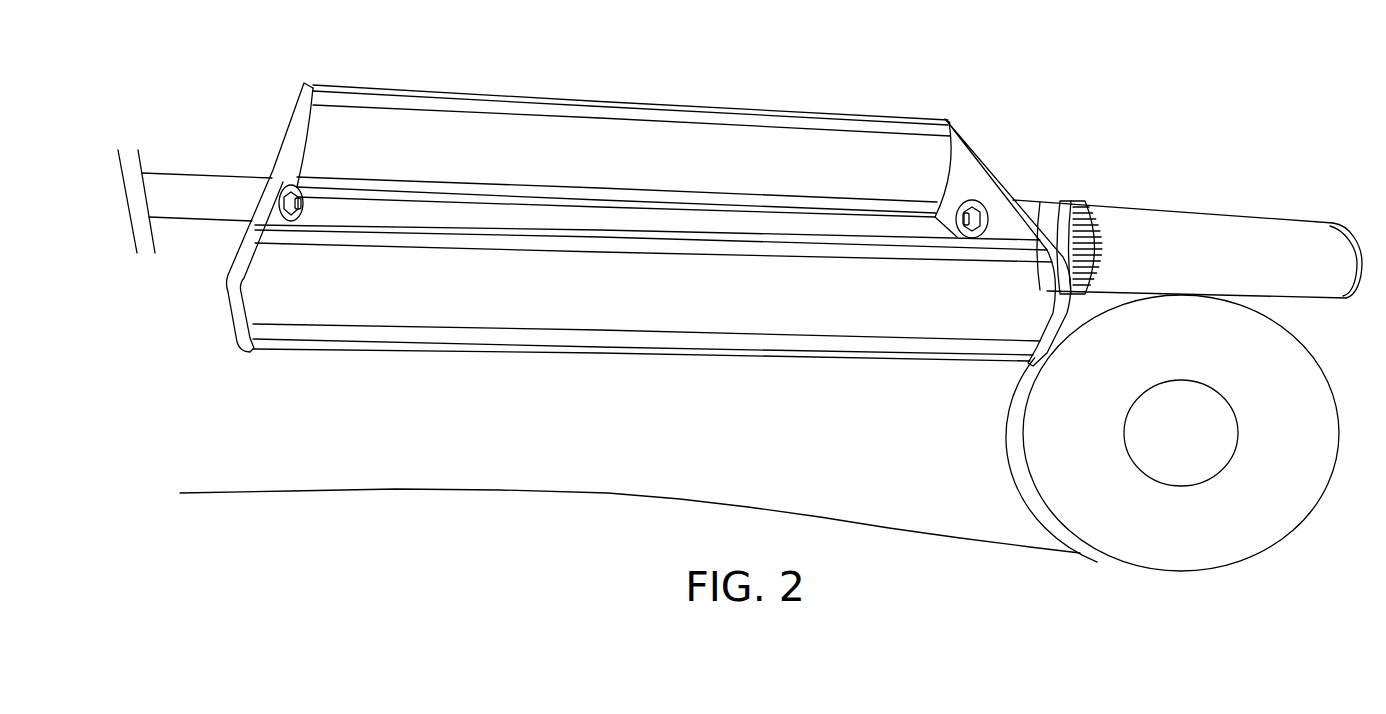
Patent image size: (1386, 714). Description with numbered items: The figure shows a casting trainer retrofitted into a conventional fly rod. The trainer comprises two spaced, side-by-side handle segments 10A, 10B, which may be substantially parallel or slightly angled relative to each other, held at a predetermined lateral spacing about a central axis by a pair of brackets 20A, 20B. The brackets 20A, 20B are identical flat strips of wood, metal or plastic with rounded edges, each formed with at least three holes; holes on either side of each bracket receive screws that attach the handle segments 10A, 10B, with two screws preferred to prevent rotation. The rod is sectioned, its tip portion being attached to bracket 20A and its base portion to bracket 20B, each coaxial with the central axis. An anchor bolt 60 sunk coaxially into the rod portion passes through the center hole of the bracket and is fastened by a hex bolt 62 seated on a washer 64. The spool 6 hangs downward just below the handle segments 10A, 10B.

The spool 6 is at (1297, 495).
The handle segment 10A is at (693, 340).
The handle segment 10B is at (683, 132).
The bracket 20A is at (297, 115).
The bracket 20B is at (1010, 197).
The anchor bolt 60 is at (300, 217).
The hex bolt 62 is at (295, 223).
The washer 64 is at (282, 227).